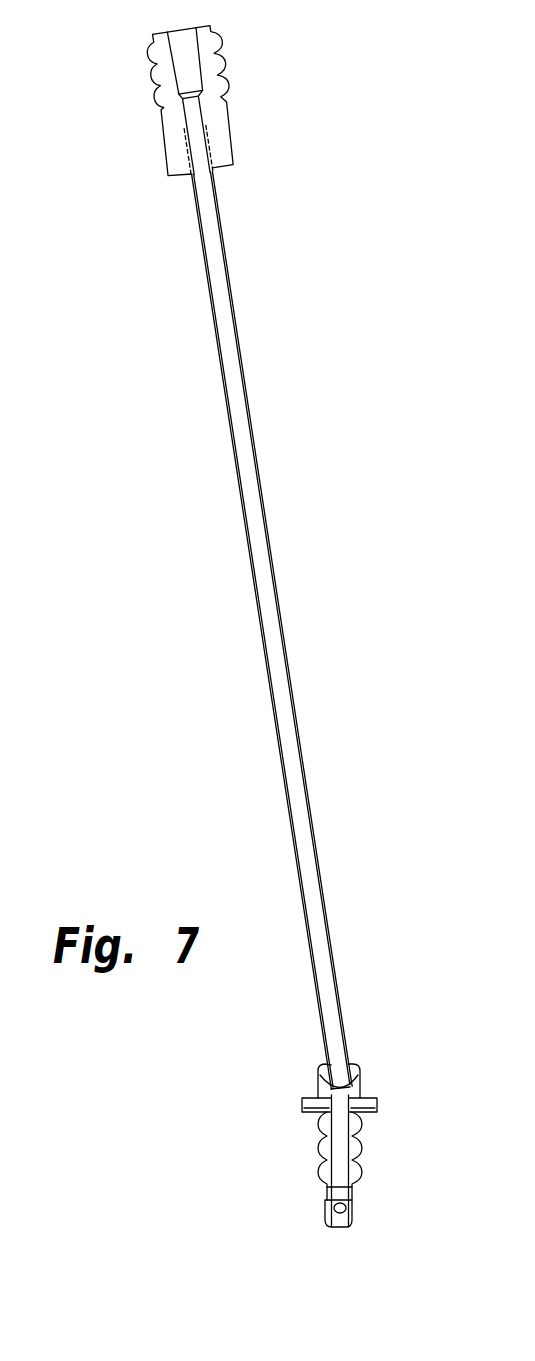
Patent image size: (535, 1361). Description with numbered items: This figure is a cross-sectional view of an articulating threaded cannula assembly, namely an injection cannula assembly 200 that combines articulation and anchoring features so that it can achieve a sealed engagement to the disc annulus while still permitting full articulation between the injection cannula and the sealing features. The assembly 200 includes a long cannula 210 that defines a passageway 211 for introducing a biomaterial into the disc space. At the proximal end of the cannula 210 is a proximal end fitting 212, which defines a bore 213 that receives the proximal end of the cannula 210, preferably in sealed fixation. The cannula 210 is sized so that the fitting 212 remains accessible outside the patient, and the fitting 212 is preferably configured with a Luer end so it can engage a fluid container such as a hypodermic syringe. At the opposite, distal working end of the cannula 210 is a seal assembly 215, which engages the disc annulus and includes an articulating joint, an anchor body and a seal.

The injection cannula assembly 200 is at (241, 625).
The cannula 210 is at (243, 545).
The passageway 211 is at (282, 677).
The proximal end fitting 212 is at (159, 138).
The bore 213 is at (201, 153).
The seal assembly 215 is at (296, 1090).